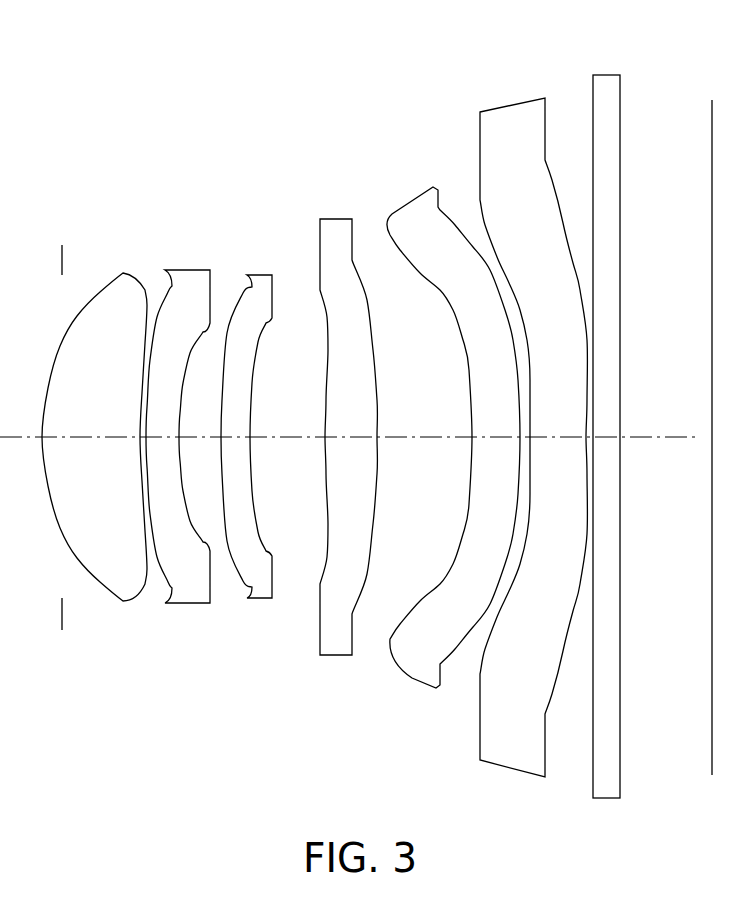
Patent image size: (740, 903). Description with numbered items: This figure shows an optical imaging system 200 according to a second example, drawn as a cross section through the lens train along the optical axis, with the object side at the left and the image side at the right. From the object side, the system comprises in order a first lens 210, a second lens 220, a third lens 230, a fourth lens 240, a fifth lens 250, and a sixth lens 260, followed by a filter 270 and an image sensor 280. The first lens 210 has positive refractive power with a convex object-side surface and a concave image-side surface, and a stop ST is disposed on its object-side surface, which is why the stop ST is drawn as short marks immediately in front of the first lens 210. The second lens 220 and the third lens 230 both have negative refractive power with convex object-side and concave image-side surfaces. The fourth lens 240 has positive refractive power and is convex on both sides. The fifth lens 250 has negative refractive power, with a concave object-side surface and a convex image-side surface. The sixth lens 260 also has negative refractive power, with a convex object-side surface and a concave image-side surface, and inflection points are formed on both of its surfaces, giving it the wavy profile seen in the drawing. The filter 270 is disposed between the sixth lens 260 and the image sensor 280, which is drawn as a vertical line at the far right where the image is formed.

The optical imaging system 200 is at (336, 108).
The stop ST is at (60, 258).
The first lens 210 is at (130, 272).
The second lens 220 is at (186, 268).
The third lens 230 is at (258, 275).
The fourth lens 240 is at (334, 218).
The fifth lens 250 is at (405, 200).
The sixth lens 260 is at (505, 103).
The filter 270 is at (604, 75).
The image sensor 280 is at (710, 127).